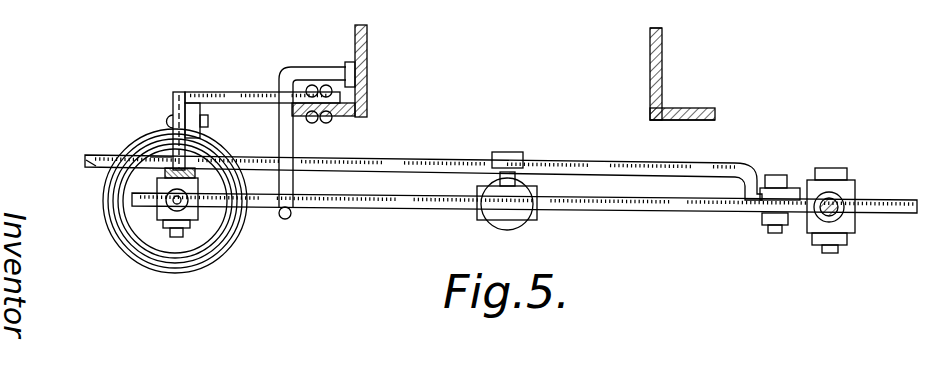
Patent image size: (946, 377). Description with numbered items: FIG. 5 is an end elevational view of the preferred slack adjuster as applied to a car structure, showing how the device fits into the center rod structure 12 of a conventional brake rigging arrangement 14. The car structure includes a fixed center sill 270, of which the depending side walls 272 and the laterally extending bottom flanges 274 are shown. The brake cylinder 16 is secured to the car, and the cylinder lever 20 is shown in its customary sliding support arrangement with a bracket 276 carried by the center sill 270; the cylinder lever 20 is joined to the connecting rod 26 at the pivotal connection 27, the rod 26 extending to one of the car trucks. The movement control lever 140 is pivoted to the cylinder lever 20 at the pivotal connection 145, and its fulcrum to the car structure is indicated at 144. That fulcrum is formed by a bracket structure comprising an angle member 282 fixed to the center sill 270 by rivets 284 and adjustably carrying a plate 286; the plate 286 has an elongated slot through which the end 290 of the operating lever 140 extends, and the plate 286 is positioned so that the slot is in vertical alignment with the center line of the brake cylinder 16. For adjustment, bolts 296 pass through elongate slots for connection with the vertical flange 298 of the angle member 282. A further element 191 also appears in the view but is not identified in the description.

The center rod structure 12 is at (117, 6).
The brake rigging arrangement 14 is at (357, 237).
The brake cylinder 16 is at (133, 259).
The cylinder lever 20 is at (422, 207).
The connecting rod 26 is at (843, 202).
The pivotal connection 27 is at (856, 145).
The movement control lever 140 is at (428, 158).
The fulcrum of control lever 144 is at (165, 153).
The pivotal connection 145 is at (779, 168).
The clamp 191 is at (517, 150).
The center sill 270 is at (672, 70).
The side walls 272 is at (367, 48).
The bottom flanges 274 is at (344, 116).
The bracket 276 is at (271, 208).
The angle member 282 is at (256, 94).
The rivets 284 is at (328, 85).
The plate 286 is at (173, 100).
The end of operating lever 290 is at (96, 168).
The bolts 296 is at (166, 121).
The vertical flange 298 is at (200, 108).